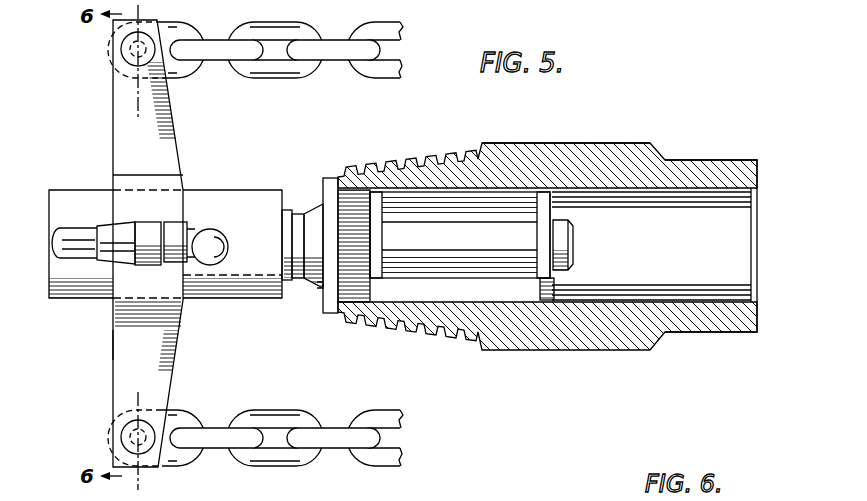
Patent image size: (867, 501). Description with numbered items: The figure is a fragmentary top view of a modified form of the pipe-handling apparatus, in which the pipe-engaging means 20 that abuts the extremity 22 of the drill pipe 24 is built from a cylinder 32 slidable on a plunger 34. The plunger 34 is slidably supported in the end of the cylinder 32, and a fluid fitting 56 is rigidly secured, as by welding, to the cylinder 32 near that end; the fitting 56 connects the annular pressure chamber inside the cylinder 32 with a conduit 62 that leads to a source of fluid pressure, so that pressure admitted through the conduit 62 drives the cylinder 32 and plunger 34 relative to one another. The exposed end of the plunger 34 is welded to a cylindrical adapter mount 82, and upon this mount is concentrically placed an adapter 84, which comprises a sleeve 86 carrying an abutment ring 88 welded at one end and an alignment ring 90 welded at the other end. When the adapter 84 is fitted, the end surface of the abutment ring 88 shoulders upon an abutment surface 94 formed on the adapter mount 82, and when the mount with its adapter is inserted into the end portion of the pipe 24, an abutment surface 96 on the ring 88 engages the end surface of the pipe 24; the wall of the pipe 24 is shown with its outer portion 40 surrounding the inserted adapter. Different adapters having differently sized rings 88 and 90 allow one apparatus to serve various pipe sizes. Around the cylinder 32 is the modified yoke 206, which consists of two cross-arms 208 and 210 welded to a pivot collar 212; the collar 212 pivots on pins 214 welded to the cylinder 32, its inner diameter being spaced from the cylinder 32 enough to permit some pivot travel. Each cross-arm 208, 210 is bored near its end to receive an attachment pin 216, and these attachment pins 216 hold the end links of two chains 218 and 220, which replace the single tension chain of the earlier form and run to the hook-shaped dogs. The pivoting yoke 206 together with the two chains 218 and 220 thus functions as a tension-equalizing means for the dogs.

In FIG. 5, the pipe-engaging means 20 is at (76, 190).
In FIG. 5, the extremity 22 is at (342, 172).
In FIG. 5, the drill pipe 24 is at (707, 160).
In FIG. 5, the cylinder 32 is at (240, 190).
In FIG. 5, the plunger 34 is at (300, 222).
In FIG. 5, the housing wall 40 is at (572, 143).
In FIG. 5, the fluid fitting 56 is at (216, 234).
In FIG. 5, the conduit 62 is at (70, 232).
In FIG. 5, the adapter mount 82 is at (569, 238).
In FIG. 5, the adapter 84 is at (418, 287).
In FIG. 5, the sleeve 86 is at (460, 235).
In FIG. 5, the abutment ring 88 is at (337, 308).
In FIG. 5, the alignment ring 90 is at (556, 284).
In FIG. 5, the abutment surface 94 is at (320, 285).
In FIG. 5, the abutment surface 96 is at (330, 178).
In FIG. 5, the yoke 206 is at (108, 336).
In FIG. 5, the cross-arm 208 is at (172, 352).
In FIG. 5, the cross-arm 210 is at (172, 145).
In FIG. 5, the pivot collar 212 is at (174, 303).
In FIG. 5, the pins 214 is at (132, 240).
In FIG. 6, the pins 214 is at (585, 500).
In FIG. 5, the attachment pins 216 is at (122, 49).
In FIG. 5, the chain 218 is at (272, 455).
In FIG. 5, the chain 220 is at (272, 68).